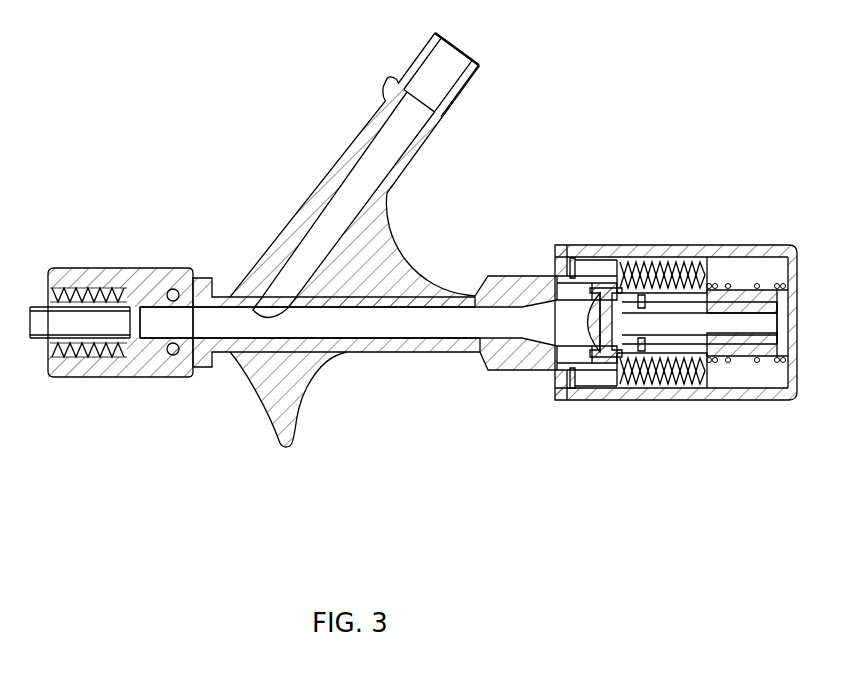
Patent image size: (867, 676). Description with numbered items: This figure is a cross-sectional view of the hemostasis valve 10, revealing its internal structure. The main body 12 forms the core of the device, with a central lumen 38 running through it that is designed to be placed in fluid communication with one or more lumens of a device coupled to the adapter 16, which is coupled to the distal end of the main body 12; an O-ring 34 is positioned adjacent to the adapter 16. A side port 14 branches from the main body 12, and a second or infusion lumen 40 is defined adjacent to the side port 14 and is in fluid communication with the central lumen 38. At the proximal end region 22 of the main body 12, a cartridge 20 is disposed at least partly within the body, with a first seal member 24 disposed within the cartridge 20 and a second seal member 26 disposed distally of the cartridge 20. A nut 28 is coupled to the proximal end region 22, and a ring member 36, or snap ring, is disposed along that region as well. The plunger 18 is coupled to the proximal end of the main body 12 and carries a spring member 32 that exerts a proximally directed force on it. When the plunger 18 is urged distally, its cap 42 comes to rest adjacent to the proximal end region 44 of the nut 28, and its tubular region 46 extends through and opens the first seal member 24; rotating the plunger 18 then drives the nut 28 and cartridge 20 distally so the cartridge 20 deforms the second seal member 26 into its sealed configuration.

The hemostasis valve 10 is at (668, 77).
The main body 12 is at (360, 343).
The side port 14 is at (460, 82).
The adapter 16 is at (123, 268).
The plunger 18 is at (687, 395).
The cartridge 20 is at (626, 300).
The proximal end region 22 is at (652, 368).
The first seal member 24 is at (583, 305).
The second seal member 26 is at (510, 293).
The nut 28 is at (690, 275).
The spring member 32 is at (740, 360).
The O-ring 34 is at (173, 356).
The ring member 36 is at (575, 382).
The central lumen 38 is at (290, 325).
The second lumen 40 is at (383, 150).
The cap 42 is at (797, 250).
The proximal end region of the nut 44 is at (708, 272).
The tubular region 46 is at (663, 377).